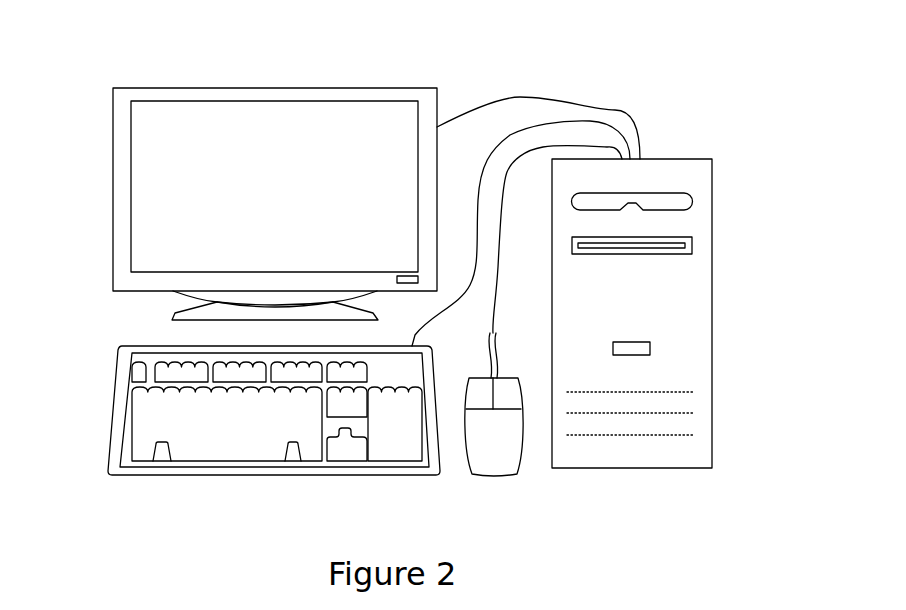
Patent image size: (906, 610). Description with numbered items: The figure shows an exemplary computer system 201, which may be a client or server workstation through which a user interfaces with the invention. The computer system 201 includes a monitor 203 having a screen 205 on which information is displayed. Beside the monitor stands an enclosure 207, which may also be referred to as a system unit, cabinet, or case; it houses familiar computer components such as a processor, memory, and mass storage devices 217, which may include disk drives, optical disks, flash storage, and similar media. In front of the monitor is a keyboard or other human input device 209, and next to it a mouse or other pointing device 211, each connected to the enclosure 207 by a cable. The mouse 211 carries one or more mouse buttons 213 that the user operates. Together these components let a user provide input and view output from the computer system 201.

The computer system 201 is at (468, 52).
The monitor 203 is at (267, 88).
The screen 205 is at (153, 185).
The enclosure 207 is at (712, 340).
The keyboard 209 is at (115, 403).
The mouse 211 is at (479, 459).
The mouse buttons 213 is at (480, 398).
The mass storage devices 217 is at (683, 193).